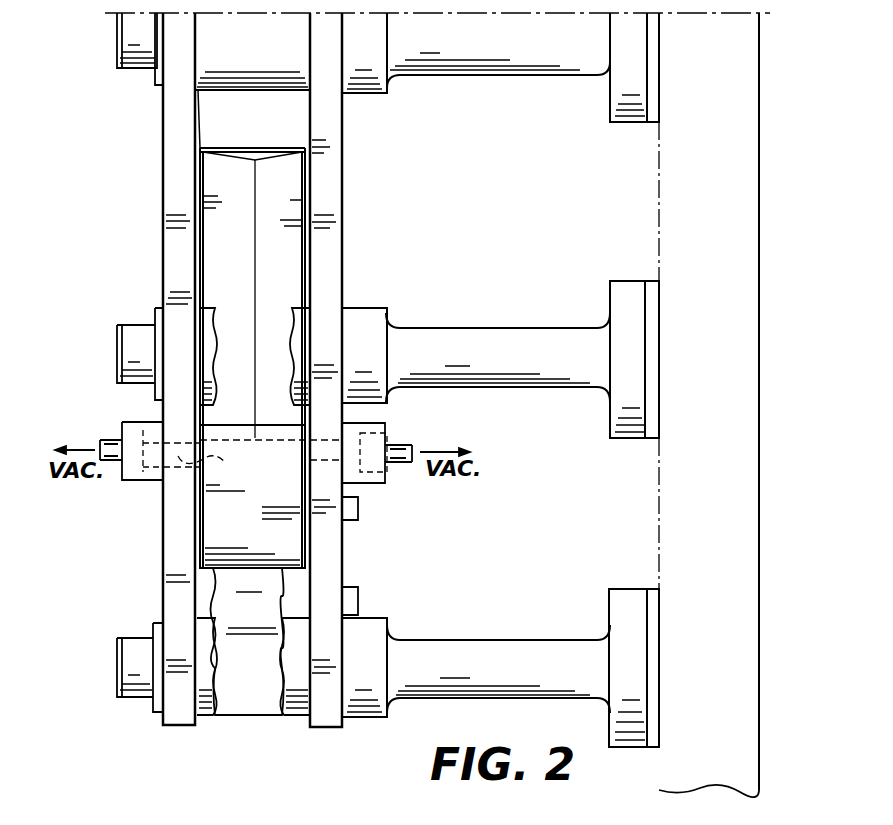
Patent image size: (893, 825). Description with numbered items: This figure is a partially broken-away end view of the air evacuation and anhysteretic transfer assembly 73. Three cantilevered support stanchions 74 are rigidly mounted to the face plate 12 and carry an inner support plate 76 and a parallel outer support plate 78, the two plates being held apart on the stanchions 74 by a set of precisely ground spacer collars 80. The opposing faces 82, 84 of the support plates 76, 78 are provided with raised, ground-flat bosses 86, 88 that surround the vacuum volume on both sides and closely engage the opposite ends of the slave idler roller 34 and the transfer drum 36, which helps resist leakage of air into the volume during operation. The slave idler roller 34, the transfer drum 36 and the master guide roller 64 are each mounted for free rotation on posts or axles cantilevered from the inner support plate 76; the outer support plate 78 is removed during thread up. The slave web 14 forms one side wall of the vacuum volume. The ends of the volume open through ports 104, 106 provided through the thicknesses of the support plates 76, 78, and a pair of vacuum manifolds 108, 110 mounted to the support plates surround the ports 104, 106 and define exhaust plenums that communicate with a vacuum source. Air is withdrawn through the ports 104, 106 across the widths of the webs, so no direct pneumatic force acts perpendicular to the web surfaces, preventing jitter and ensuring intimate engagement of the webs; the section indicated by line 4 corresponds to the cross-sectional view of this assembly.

The face plate 12 is at (750, 90).
The cantilevered support stanchions 74 is at (532, 76).
The outer support plate 78 is at (180, 180).
The opposing face of outer support plate 84 is at (312, 98).
The opposing face of inner support plate 82 is at (198, 128).
The spacer collars 80 is at (228, 75).
The transfer drum 36 is at (292, 204).
The slave web 14 is at (272, 147).
The raised ground-flat boss 86 is at (204, 252).
The raised ground-flat boss 88 is at (300, 250).
The slave idler roller 34 is at (197, 542).
The master guide roller 64 is at (255, 628).
The air evacuation and anhysteretic transfer assembly 73 is at (150, 284).
The vacuum manifold 110 is at (122, 422).
The port 106 is at (150, 440).
The vacuum manifold 108 is at (387, 433).
The port 104 is at (330, 462).
The inner support plate 76 is at (333, 578).
The section line 4- 4 is at (148, 511).